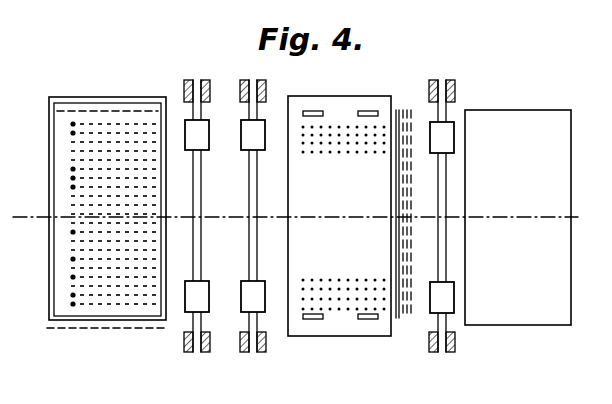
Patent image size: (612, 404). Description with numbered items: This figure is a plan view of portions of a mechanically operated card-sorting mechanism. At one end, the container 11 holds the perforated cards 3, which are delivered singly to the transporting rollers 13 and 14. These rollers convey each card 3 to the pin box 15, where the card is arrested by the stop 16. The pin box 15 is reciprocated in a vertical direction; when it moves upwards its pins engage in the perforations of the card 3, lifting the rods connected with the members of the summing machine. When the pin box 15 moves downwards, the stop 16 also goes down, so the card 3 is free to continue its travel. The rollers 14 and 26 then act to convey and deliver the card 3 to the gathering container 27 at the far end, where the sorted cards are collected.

The card 3 is at (113, 213).
The container 11 is at (50, 283).
The transporting roller 13 is at (251, 259).
The transporting roller 14 is at (363, 320).
The pin box 15 is at (339, 216).
The stop 16 is at (403, 261).
The roller 26 is at (437, 151).
The gathering container 27 is at (518, 217).